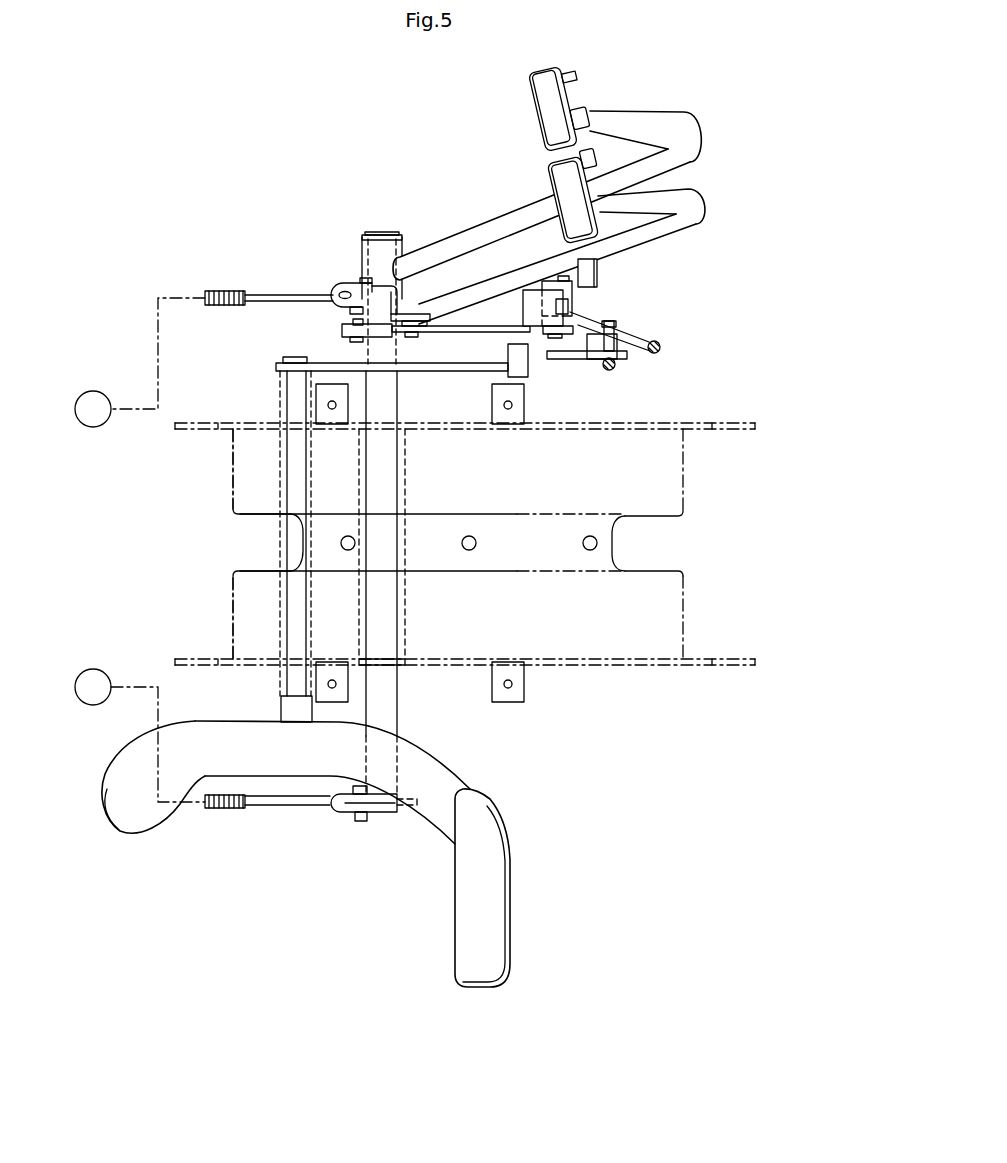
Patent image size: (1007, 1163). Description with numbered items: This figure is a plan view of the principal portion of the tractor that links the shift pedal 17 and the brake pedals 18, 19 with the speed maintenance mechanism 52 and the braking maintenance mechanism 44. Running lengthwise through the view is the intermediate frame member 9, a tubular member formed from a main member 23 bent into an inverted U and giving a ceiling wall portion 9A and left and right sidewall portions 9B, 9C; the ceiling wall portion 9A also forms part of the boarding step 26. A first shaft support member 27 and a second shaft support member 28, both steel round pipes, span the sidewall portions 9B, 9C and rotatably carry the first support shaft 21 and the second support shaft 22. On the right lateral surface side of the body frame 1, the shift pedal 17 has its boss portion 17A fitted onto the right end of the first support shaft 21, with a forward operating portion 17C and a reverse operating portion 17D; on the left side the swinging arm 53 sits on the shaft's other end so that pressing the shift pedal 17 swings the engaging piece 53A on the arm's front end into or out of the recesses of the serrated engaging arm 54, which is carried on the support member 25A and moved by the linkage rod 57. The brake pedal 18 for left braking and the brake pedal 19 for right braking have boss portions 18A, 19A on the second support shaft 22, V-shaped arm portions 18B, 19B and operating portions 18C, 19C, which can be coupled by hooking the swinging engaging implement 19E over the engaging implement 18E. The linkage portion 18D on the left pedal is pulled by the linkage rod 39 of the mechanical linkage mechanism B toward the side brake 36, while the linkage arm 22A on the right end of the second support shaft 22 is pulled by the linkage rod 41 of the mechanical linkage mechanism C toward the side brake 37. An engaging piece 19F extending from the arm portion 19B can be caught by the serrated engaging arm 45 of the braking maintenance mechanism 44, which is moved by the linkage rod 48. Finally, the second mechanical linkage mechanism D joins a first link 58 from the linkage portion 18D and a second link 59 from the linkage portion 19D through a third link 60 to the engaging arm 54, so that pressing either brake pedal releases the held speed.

The body frame 1 is at (688, 426).
The intermediate frame member 9 is at (475, 533).
The ceiling wall portion 9A is at (630, 522).
The sidewall portion 9B is at (525, 432).
The sidewall portion 9C is at (528, 660).
The shift pedal 17 is at (343, 854).
The boss portion 17A is at (290, 712).
The forward operating portion 17C is at (465, 940).
The reverse operating portion 17D is at (137, 803).
The brake pedal 18 is at (576, 159).
The boss portion 18A is at (351, 252).
The arm portion 18B is at (688, 128).
The operating portion 18C is at (540, 106).
The linkage portion 18D is at (344, 291).
The engaging implement 18E is at (587, 112).
The brake pedal 19 is at (596, 231).
The boss portion 19A is at (393, 402).
The arm portion 19B is at (698, 210).
The operating portion 19C is at (558, 180).
The linkage portion 19D is at (343, 331).
The swinging engaging implement 19E is at (592, 160).
The engaging piece 19F is at (600, 274).
The first support shaft 21 is at (290, 480).
The second support shaft 22 is at (387, 482).
The linkage arm 22A is at (390, 818).
The main member 23 is at (430, 469).
The support member 25A is at (523, 303).
The boarding step 26 is at (556, 543).
The first shaft support member 27 is at (295, 555).
The second shaft support member 28 is at (407, 606).
The side brake 36 is at (140, 362).
The side brake 37 is at (140, 735).
The linkage rod 39 is at (250, 305).
The linkage rod 41 is at (278, 808).
The braking maintenance mechanism 44 is at (566, 288).
The engaging arm 45 is at (552, 288).
The linkage rod 48 is at (660, 347).
The speed maintenance mechanism 52 is at (557, 365).
The swinging arm 53 is at (278, 366).
The engaging piece 53A is at (530, 362).
The engaging arm 54 is at (627, 357).
The linkage rod 57 is at (615, 363).
The first link 58 is at (381, 290).
The second link 59 is at (423, 332).
The third link 60 is at (445, 325).
The mechanical linkage mechanism B is at (228, 291).
The mechanical linkage mechanism C is at (228, 810).
The second mechanical linkage mechanism D is at (412, 312).